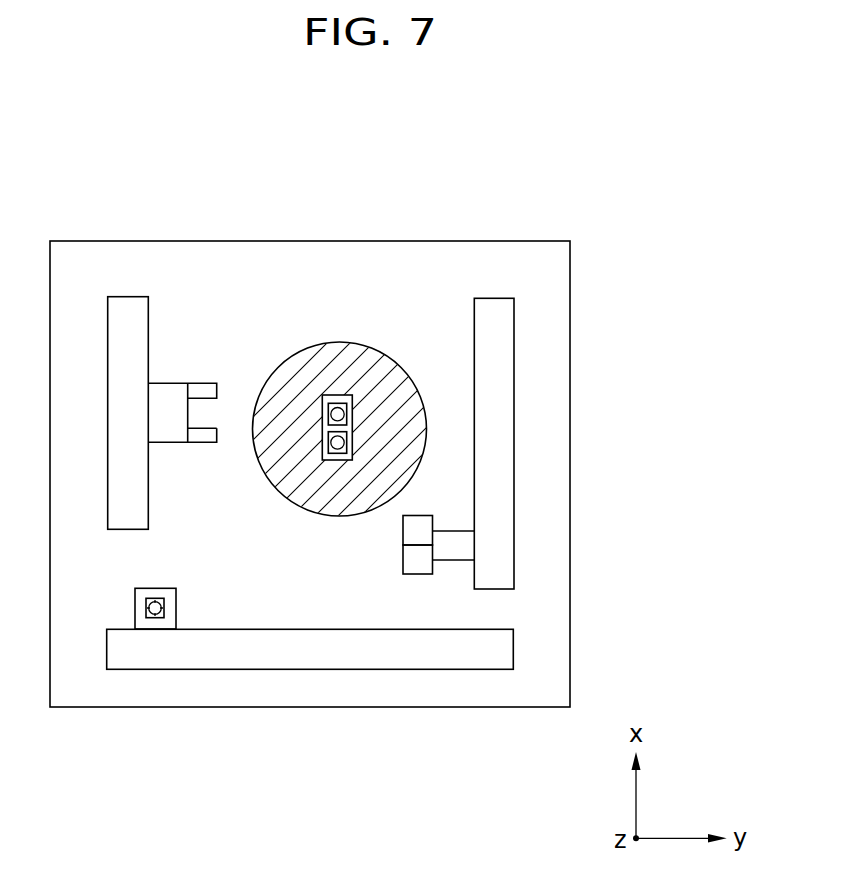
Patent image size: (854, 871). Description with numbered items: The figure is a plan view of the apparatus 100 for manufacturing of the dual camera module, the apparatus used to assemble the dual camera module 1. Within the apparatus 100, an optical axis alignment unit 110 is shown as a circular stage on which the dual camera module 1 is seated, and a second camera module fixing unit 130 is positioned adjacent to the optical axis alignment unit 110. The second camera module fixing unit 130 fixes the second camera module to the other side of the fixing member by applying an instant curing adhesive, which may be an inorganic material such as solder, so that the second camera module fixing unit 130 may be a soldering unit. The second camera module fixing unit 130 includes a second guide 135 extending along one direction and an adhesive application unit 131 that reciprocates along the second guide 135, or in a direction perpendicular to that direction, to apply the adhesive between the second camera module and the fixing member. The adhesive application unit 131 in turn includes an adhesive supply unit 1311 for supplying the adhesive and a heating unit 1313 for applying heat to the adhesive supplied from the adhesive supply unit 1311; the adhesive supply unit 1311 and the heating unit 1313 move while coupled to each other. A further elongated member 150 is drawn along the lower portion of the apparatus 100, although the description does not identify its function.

The apparatus for manufacturing of the dual camera module 100 is at (524, 133).
The optical axis alignment unit 110 is at (322, 318).
The dual camera module 1 is at (338, 395).
The second camera module fixing unit 130 is at (574, 445).
The second guide 135 is at (505, 423).
The adhesive application unit 131 is at (574, 545).
The adhesive supply unit 1311 is at (428, 522).
The heating unit 1313 is at (428, 568).
The guide bar 150 is at (535, 649).